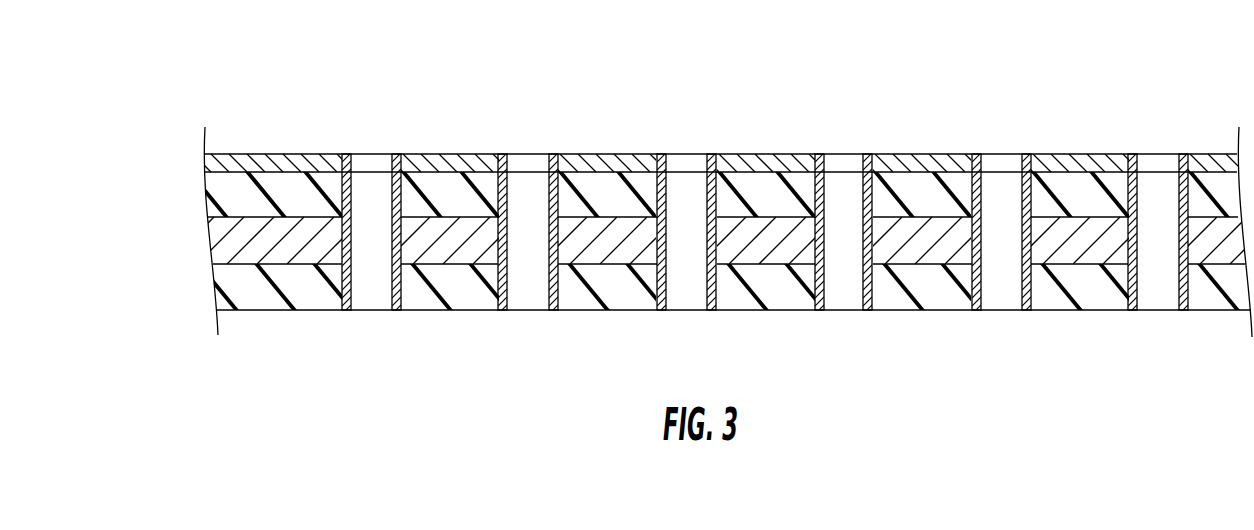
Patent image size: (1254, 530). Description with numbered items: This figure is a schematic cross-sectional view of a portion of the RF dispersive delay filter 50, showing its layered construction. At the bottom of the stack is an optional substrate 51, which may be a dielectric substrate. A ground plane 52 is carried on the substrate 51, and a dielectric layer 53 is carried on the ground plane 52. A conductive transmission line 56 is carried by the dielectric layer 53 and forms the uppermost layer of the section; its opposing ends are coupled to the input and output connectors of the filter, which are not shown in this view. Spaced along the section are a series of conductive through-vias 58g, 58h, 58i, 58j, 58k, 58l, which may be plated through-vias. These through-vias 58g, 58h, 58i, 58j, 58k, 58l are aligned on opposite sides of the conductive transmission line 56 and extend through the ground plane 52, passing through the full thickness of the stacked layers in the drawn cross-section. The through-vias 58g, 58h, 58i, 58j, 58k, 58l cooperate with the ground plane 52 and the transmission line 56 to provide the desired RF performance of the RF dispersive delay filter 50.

The RF dispersive delay filter 50 is at (687, 208).
The substrate 51 is at (222, 286).
The ground plane 52 is at (220, 242).
The dielectric layer 53 is at (222, 195).
The conductive transmission line 56 is at (291, 173).
The conductive through-via 58g is at (394, 300).
The conductive through-via 58h is at (551, 300).
The conductive through-via 58i is at (708, 168).
The conductive through-via 58j is at (866, 300).
The conductive through-via 58k is at (1022, 168).
The conductive through-via 58l is at (1181, 300).